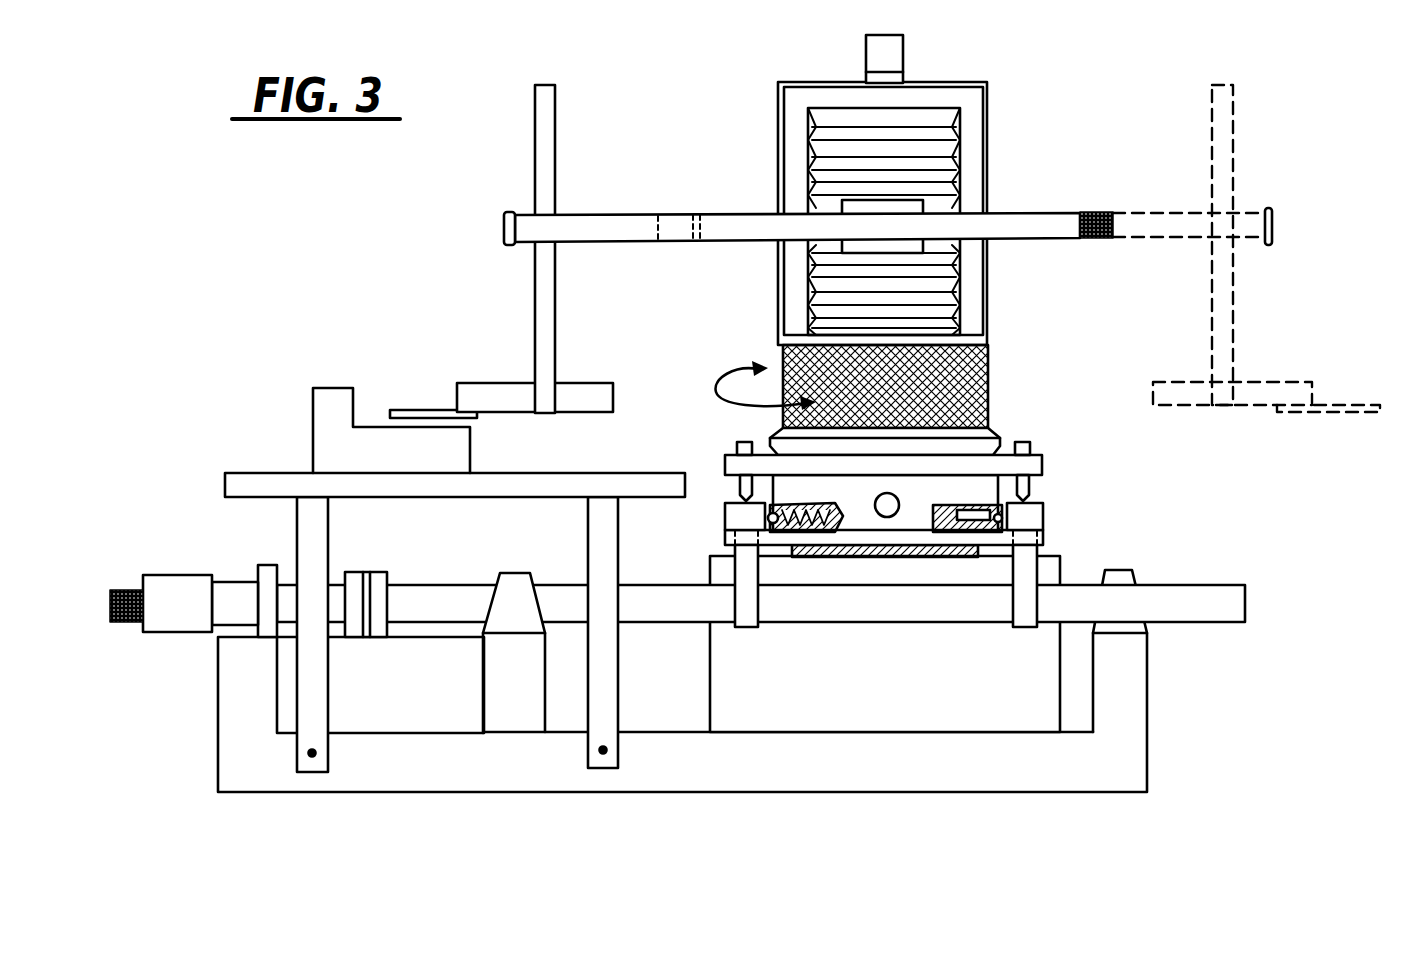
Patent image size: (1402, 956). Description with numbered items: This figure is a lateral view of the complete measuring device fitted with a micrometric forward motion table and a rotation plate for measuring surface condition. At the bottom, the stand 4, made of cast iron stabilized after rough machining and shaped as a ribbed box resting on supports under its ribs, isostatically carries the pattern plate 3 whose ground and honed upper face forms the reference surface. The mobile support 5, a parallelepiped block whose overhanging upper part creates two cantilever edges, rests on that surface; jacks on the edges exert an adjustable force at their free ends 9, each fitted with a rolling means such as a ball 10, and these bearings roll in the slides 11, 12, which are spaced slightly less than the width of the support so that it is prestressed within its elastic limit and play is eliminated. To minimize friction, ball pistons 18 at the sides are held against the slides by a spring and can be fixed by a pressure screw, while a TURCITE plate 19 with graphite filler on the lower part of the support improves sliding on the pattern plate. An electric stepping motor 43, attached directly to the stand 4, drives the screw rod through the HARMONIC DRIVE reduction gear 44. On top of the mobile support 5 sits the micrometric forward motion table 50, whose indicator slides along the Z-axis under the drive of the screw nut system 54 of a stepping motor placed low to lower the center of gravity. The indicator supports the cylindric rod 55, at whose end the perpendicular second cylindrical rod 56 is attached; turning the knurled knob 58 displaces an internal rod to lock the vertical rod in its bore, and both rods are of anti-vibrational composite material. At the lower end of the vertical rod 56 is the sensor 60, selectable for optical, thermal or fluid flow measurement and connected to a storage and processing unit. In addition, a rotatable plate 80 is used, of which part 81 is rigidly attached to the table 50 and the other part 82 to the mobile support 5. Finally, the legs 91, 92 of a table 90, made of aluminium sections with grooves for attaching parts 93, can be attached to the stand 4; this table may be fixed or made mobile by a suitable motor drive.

The pattern plate 3 is at (727, 665).
The stand 4 is at (1135, 693).
The mobile support 5 is at (955, 478).
The free ends of the jacks 9 is at (738, 488).
The ball 10 is at (738, 500).
The slide 11 is at (1045, 512).
The slide 12 is at (728, 521).
The ball pistons 18 is at (808, 534).
The TURCITE plate 19 is at (905, 552).
The electric stepping motor 43 is at (175, 592).
The HARMONIC DRIVE reduction gear 44 is at (240, 592).
The micrometric forward motion table 50 is at (1005, 150).
The screw nut system 54 is at (868, 50).
The cylindric rod 55 is at (730, 241).
The second cylindrical rod 56 is at (548, 147).
The knurled knob 58 is at (1093, 241).
The sensor 60 is at (605, 400).
The rotatable plate 80 is at (935, 386).
The part of the rotatable plate 81 is at (968, 432).
The other part of the rotatable plate 82 is at (933, 447).
The table 90 is at (275, 478).
The leg of the table 91 is at (612, 722).
The leg of the table 92 is at (322, 720).
The parts 93 is at (342, 418).